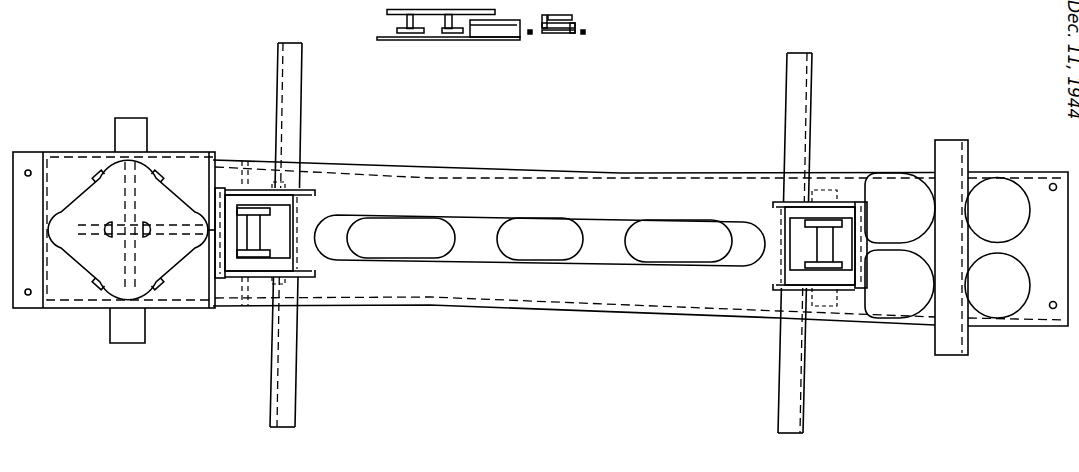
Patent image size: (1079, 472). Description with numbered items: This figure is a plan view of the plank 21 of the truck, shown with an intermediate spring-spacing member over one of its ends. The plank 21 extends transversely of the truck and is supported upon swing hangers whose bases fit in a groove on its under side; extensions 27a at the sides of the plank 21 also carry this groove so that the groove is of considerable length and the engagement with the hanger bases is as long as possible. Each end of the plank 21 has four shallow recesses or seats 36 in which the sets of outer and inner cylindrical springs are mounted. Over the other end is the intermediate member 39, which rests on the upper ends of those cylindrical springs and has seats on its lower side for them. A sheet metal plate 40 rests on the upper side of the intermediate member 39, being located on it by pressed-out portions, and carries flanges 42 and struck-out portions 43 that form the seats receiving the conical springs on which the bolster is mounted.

The plank 21 is at (657, 172).
The intermediate member 39 is at (167, 153).
The extensions 27a is at (133, 120).
The sheet metal plate 40 is at (113, 214).
The struck-out portions 43 is at (108, 237).
The flanges 42 is at (91, 172).
The seats 36 is at (888, 178).